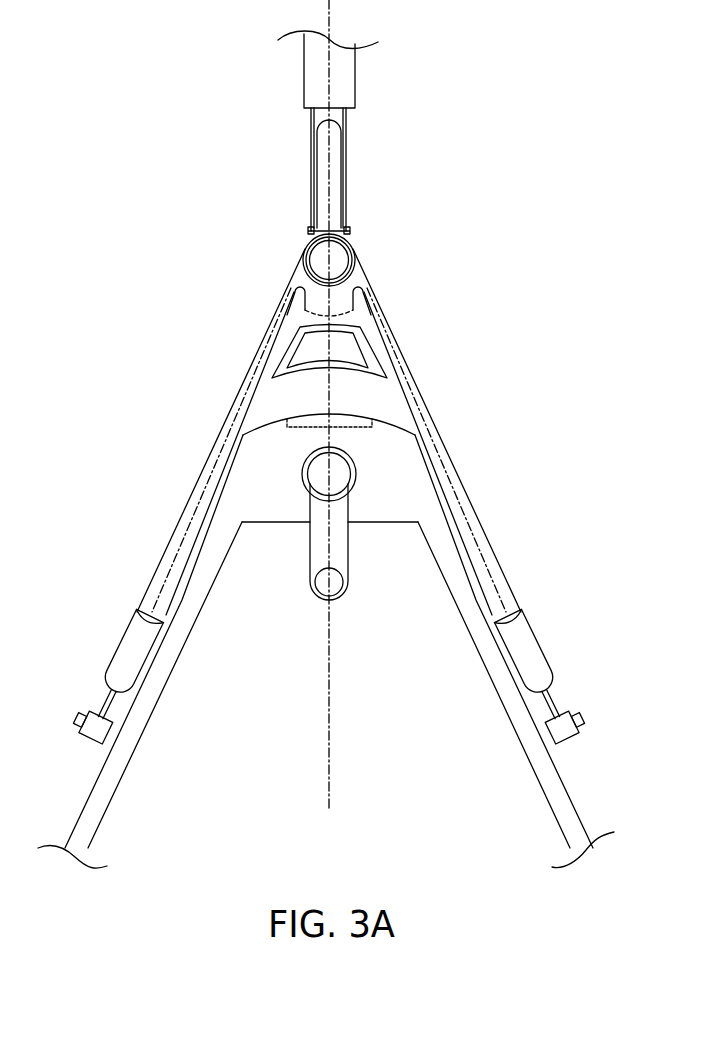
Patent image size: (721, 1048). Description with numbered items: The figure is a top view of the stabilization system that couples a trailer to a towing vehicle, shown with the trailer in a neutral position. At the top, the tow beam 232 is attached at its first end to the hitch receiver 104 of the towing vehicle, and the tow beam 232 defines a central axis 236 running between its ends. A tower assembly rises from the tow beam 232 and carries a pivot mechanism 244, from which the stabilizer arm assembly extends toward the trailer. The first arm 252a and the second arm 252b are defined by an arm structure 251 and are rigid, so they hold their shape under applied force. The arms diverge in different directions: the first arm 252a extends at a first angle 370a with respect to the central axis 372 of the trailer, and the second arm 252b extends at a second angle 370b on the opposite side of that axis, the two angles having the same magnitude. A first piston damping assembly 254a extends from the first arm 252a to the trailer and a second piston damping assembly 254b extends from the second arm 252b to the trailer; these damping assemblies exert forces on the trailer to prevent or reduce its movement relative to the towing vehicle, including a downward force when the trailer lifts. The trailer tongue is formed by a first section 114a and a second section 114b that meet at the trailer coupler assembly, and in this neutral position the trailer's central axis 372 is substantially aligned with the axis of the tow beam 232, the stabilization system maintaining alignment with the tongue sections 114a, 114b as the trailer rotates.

The hitch receiver 104 is at (356, 82).
The tow beam 232 is at (347, 145).
The central axis 236 is at (330, 183).
The pivot mechanism 244 is at (355, 260).
The first angle 370a is at (360, 292).
The second angle 370b is at (300, 292).
The arm structure 251 is at (405, 348).
The first arm 252a is at (477, 503).
The second arm 252b is at (183, 500).
The first piston damping assembly 254a is at (545, 652).
The second piston damping assembly 254b is at (118, 658).
The first section 114a is at (475, 649).
The second section 114b is at (175, 671).
The central axis 372 is at (329, 660).